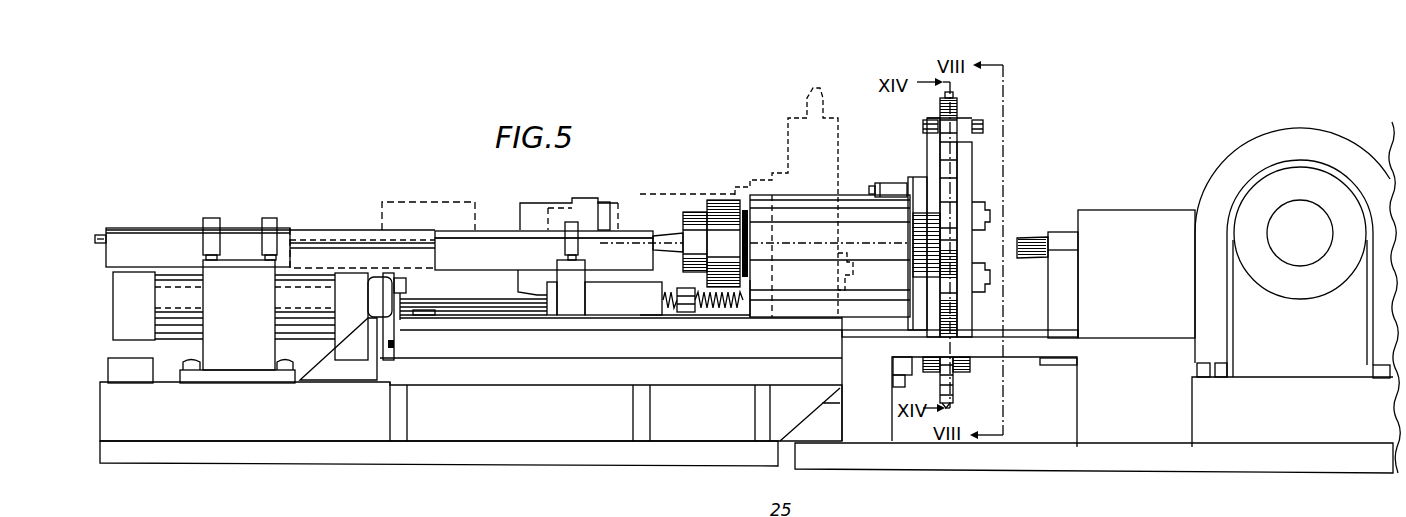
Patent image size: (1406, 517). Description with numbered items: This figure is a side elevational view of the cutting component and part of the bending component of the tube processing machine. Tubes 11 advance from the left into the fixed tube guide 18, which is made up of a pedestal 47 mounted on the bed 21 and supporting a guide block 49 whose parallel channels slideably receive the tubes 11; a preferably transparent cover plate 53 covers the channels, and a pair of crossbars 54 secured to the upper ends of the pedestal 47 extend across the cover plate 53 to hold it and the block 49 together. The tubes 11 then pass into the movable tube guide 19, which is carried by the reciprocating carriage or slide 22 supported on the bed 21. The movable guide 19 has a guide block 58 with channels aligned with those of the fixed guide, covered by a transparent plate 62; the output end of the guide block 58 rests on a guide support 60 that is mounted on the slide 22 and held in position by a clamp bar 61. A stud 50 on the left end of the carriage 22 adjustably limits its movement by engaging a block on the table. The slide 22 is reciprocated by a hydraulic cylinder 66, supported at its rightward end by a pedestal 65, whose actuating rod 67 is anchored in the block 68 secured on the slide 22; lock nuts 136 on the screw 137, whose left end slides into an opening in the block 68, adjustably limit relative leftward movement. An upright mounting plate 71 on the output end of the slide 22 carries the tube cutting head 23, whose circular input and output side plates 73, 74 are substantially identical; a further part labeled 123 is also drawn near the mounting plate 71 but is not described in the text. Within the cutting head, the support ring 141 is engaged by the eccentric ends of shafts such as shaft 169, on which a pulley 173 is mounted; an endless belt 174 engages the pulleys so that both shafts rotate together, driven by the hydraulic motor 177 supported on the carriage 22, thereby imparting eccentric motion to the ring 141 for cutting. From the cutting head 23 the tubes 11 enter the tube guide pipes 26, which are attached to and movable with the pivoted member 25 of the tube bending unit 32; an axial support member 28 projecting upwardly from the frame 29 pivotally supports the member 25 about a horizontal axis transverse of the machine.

The tube 11 is at (100, 230).
The fixed tube guide 18 is at (162, 222).
The movable tube guide 19 is at (487, 222).
The bed 21 is at (523, 430).
The reciprocating carriage or slide 22 is at (590, 327).
The tube cutting head 23 is at (988, 142).
The pivoted member 25 is at (1120, 227).
The tube guide pipes 26 is at (1032, 237).
The axial support member 28 is at (1307, 137).
The frame 29 is at (1287, 455).
The tube bending unit 32 is at (1354, 128).
The pedestal 47 is at (245, 358).
The guide block 49 is at (137, 243).
The stud 50 is at (394, 347).
The cover plate 53 is at (173, 230).
The crossbar 54 is at (213, 220).
The guide block 58 is at (507, 258).
The guide support 60 is at (570, 315).
The clamp bar 61 is at (571, 222).
The transparent plate 62 is at (505, 231).
The pedestal 65 is at (348, 367).
The hydraulic cylinder 66 is at (187, 310).
The actuating rod 67 is at (480, 305).
The block 68 is at (620, 315).
The mounting plate 71 is at (920, 177).
The input side plate 73 is at (935, 143).
The output side plate 74 is at (970, 160).
The nut 123 is at (892, 183).
The lock nut 136 is at (677, 312).
The screw 137 is at (723, 308).
The support ring 141 is at (953, 112).
The shaft 169 is at (653, 245).
The pulley 173 is at (703, 212).
The endless belt 174 is at (723, 200).
The hydraulic motor 177 is at (607, 210).